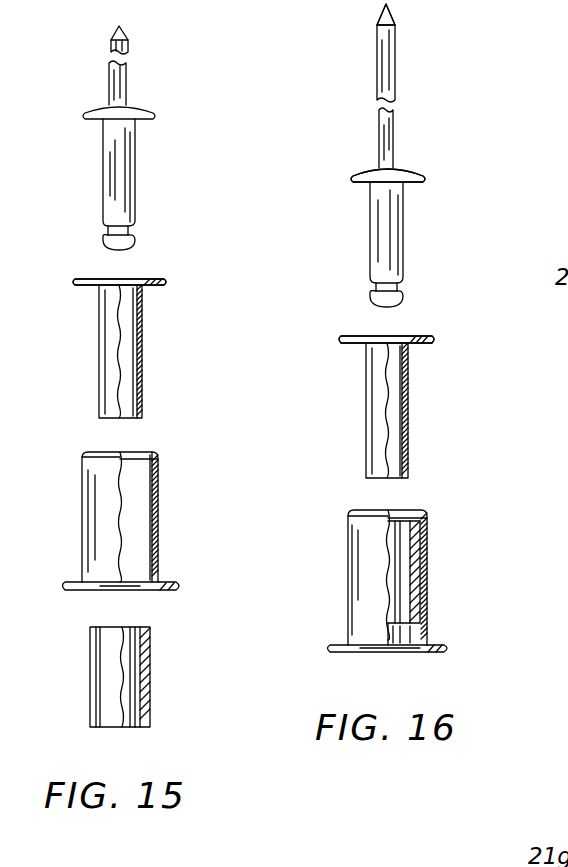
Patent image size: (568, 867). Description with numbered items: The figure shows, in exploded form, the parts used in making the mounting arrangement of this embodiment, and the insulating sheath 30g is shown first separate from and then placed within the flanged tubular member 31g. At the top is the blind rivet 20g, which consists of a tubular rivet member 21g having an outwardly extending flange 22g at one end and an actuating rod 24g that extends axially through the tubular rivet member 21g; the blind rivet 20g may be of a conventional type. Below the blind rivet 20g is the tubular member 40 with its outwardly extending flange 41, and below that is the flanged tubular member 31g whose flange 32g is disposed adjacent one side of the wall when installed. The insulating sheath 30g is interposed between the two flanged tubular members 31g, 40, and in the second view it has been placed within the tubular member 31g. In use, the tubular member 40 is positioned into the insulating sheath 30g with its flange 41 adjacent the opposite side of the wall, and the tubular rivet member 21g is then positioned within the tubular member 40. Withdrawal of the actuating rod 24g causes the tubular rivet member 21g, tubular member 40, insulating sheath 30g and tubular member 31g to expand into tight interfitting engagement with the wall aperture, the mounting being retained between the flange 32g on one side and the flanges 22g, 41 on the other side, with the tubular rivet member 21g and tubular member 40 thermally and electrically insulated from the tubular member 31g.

In FIG. 16, the blind rivet 20g is at (408, 207).
In FIG. 15, the tubular rivet member 21g is at (104, 176).
In FIG. 16, the tubular rivet member 21g is at (371, 247).
In FIG. 15, the outwardly extending flange 22g is at (141, 108).
In FIG. 16, the outwardly extending flange 22g is at (410, 170).
In FIG. 15, the actuating rod 24g is at (124, 62).
In FIG. 16, the actuating rod 24g is at (396, 55).
In FIG. 15, the insulating sheath 30g is at (150, 652).
In FIG. 16, the insulating sheath 30g is at (405, 592).
In FIG. 15, the flanged tubular member 31g is at (158, 500).
In FIG. 16, the flanged tubular member 31g is at (428, 545).
In FIG. 15, the flange 32g is at (165, 580).
In FIG. 16, the flange 32g is at (438, 648).
In FIG. 15, the tubular member 40 is at (142, 348).
In FIG. 16, the tubular member 40 is at (408, 368).
In FIG. 15, the outwardly extending flange 41 is at (152, 280).
In FIG. 16, the outwardly extending flange 41 is at (425, 337).